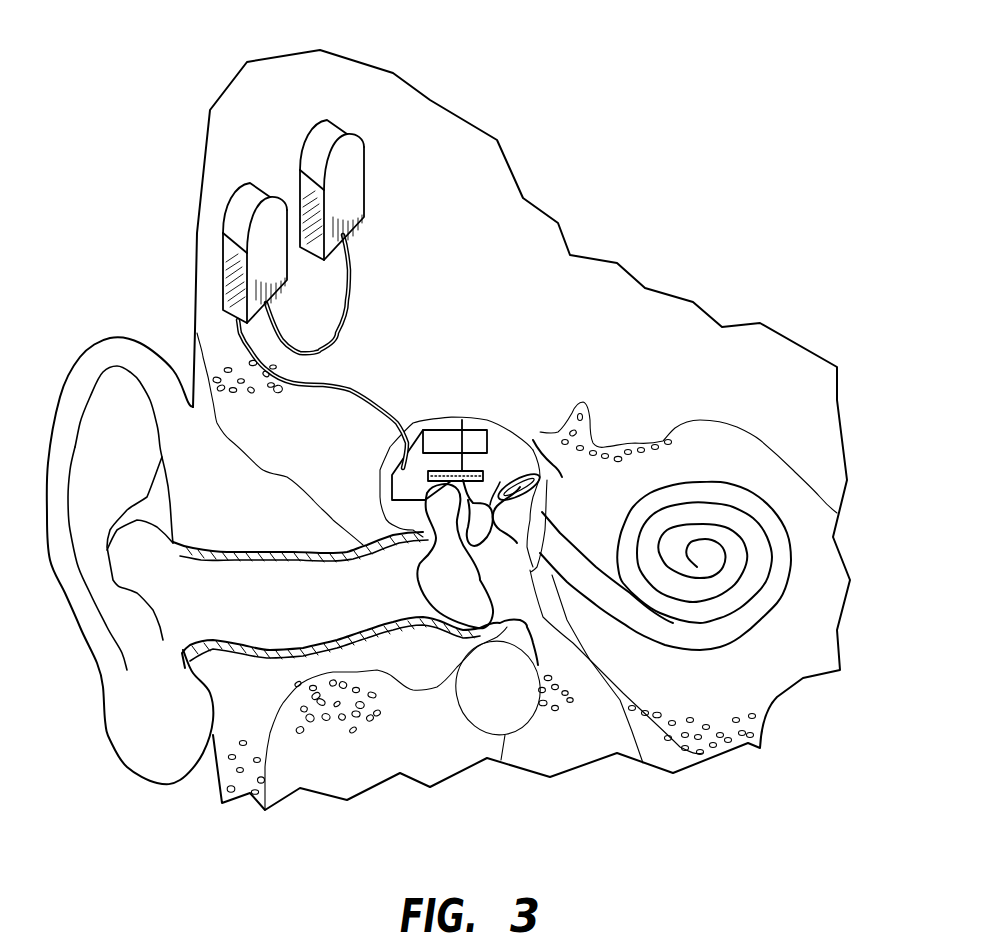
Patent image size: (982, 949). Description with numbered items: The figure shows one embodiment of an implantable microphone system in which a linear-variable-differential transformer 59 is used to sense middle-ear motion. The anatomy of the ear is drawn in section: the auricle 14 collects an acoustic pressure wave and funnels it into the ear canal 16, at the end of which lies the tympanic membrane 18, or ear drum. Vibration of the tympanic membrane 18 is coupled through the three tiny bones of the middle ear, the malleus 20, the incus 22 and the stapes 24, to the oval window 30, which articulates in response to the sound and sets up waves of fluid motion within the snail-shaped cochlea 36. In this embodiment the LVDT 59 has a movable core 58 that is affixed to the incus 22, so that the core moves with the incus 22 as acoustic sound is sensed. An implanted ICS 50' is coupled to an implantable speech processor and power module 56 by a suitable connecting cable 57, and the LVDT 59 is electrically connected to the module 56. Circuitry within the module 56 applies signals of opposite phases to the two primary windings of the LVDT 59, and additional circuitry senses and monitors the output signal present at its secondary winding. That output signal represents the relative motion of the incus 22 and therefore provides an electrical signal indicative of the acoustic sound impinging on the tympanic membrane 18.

The auricle 14 is at (127, 763).
The ear canal 16 is at (307, 604).
The tympanic membrane 18 is at (420, 573).
The malleus 20 is at (480, 557).
The incus 22 is at (485, 478).
The stapes 24 is at (511, 527).
The oval window 30 is at (533, 440).
The cochlea 36 is at (760, 600).
The implanted ICS 50' is at (343, 138).
The implantable speech processor and power module 56 is at (250, 197).
The connecting cable 57 is at (350, 297).
The movable core 58 is at (462, 420).
The linear-variable-differential transformer 59 is at (400, 463).